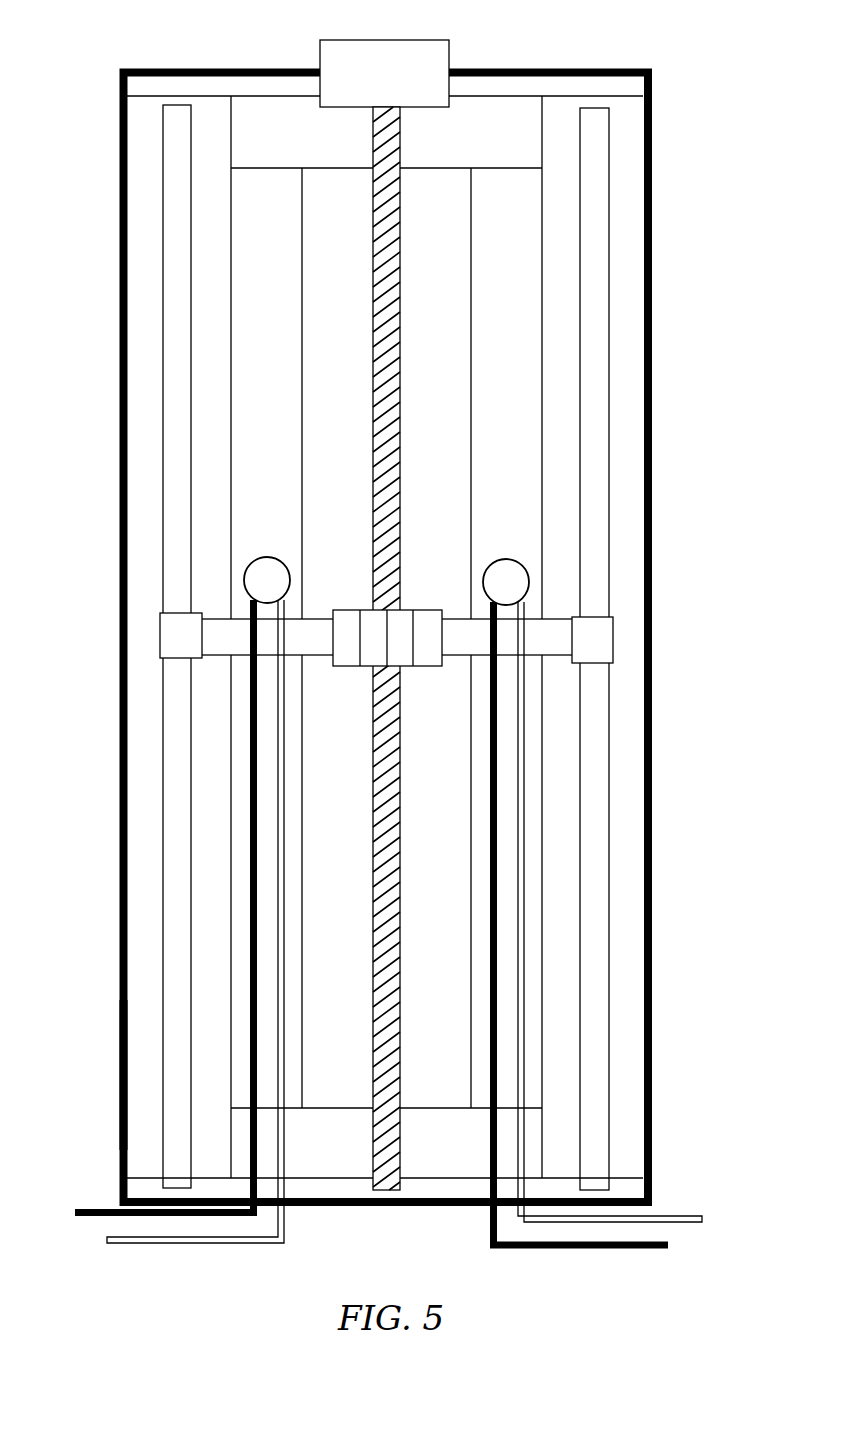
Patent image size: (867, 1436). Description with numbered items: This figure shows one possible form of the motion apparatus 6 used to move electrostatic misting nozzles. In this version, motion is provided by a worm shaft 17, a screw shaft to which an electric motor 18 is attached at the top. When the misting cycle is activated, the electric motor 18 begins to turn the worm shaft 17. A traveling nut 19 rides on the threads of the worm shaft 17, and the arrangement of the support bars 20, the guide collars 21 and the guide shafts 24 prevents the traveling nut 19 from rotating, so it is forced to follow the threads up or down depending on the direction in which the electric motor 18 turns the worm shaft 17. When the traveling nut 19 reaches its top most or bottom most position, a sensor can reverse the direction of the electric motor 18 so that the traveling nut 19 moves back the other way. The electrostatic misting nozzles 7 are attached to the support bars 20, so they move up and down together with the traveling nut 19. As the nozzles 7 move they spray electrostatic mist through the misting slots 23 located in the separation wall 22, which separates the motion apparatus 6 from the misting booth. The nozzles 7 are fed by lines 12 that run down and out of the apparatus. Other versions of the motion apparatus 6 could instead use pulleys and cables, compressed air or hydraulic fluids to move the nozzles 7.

The motion apparatus 6 is at (652, 247).
The electrostatic misting nozzle 7 is at (260, 572).
The fluid pipes 12 is at (480, 1247).
The worm shaft 17 is at (390, 402).
The electric motor 18 is at (435, 57).
The traveling nut 19 is at (427, 660).
The support bar 20 is at (215, 627).
The guide collar 21 is at (170, 645).
The separation wall 22 is at (123, 1067).
The misting slot 23 is at (250, 264).
The guide shaft 24 is at (180, 880).